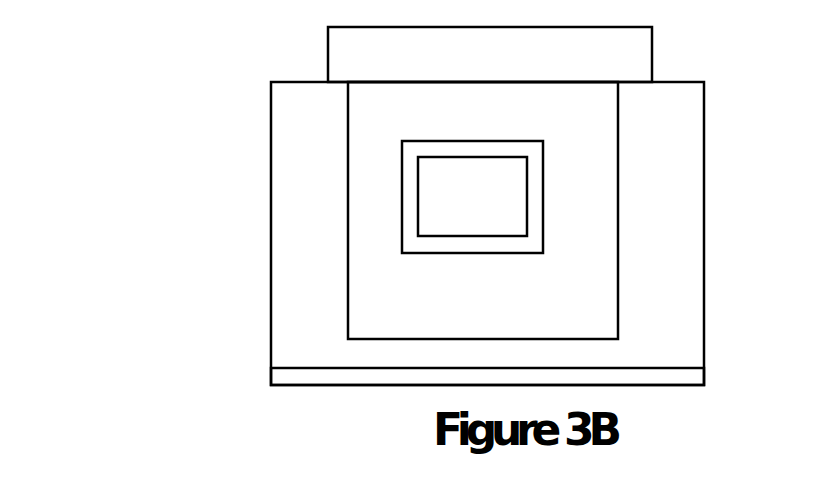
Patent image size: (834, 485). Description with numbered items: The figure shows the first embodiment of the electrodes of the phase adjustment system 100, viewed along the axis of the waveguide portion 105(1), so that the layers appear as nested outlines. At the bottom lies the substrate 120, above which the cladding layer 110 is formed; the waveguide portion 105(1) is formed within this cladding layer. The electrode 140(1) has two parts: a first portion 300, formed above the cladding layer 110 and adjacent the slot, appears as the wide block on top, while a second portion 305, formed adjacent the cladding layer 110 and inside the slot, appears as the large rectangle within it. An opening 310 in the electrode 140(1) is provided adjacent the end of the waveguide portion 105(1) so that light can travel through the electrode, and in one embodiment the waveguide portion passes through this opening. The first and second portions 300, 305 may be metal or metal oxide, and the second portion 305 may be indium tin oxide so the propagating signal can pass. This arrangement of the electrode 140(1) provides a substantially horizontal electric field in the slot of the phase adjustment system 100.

The phase adjustment system 100 is at (138, 88).
The cladding layer 110 is at (705, 257).
The substrate 120 is at (703, 378).
The electrode 140 is at (716, 37).
The waveguide portion 105 is at (528, 192).
The first portion of the electrode 300 is at (328, 60).
The second portion of the electrode 305 is at (347, 230).
The opening 310 is at (452, 254).